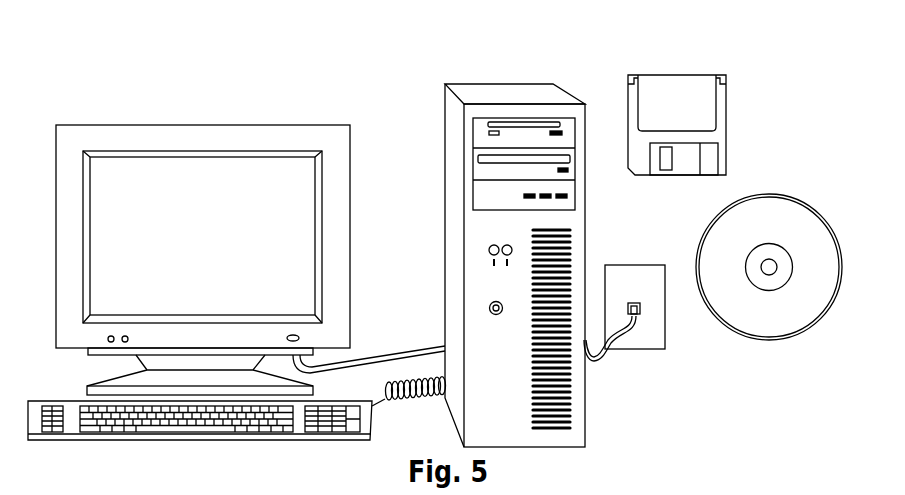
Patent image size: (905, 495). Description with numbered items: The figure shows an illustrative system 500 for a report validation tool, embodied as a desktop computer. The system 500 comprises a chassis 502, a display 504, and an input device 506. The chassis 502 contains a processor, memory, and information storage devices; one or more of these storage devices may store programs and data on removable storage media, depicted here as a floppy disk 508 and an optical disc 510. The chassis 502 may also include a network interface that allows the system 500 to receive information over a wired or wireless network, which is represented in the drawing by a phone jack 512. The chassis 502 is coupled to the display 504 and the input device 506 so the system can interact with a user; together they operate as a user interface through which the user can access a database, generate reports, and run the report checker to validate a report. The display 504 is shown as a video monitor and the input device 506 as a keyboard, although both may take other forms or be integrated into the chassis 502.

The system 500 is at (597, 73).
The chassis 502 is at (446, 301).
The display 504 is at (73, 349).
The input device 506 is at (67, 441).
The floppy disk 508 is at (722, 154).
The optical disc 510 is at (782, 195).
The phone jack 512 is at (628, 266).